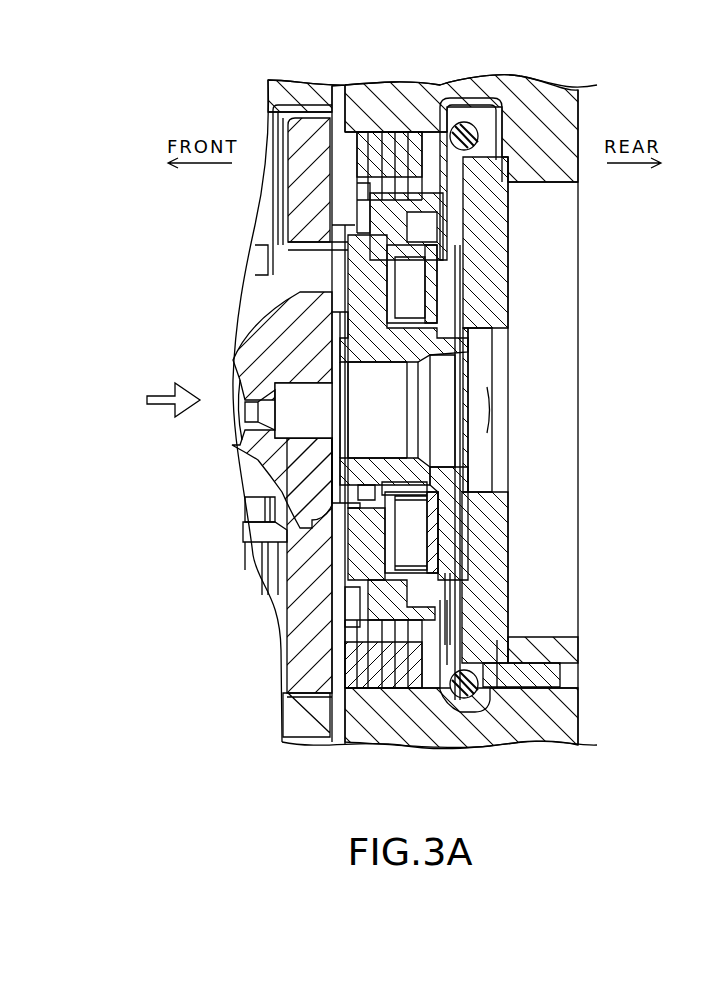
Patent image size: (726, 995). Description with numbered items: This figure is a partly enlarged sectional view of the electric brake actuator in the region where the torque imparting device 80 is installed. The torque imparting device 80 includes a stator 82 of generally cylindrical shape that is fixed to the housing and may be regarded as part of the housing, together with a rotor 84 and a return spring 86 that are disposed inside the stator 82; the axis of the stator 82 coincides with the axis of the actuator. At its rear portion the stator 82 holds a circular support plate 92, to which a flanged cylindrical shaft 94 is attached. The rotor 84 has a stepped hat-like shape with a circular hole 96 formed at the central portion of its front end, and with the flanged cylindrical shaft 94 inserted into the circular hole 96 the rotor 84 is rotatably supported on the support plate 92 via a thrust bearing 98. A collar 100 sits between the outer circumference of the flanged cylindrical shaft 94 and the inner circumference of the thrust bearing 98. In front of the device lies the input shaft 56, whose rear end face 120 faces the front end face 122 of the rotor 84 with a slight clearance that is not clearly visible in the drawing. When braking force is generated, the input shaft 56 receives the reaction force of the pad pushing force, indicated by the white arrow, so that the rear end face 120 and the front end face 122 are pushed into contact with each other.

The torque imparting device 80 is at (433, 106).
The stator 82 is at (433, 762).
The rotor 84 is at (330, 556).
The return spring 86 is at (362, 704).
The support plate 92 is at (498, 592).
The flanged cylindrical shaft 94 is at (448, 452).
The circular hole 96 is at (250, 545).
The thrust bearing 98 is at (462, 543).
The collar 100 is at (462, 520).
The rear end face 120 is at (345, 318).
The front end face 122 is at (375, 268).
The input shaft 56 is at (246, 476).